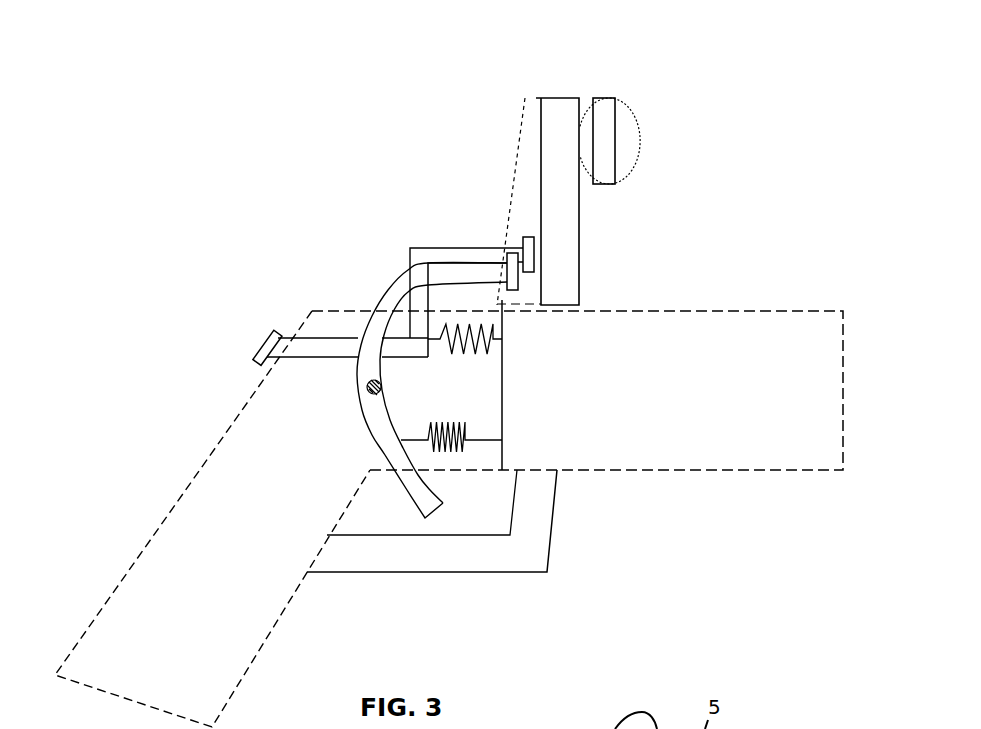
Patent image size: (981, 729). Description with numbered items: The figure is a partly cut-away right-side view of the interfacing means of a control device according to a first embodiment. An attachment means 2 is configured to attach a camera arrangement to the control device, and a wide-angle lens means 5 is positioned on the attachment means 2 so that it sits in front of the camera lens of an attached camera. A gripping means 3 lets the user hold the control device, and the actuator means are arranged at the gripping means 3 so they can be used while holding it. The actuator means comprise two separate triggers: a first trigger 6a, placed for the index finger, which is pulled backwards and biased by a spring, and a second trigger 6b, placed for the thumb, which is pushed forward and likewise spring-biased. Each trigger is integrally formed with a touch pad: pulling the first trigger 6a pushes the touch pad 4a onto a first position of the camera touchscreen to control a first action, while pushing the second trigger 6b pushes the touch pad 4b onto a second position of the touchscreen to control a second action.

The attachment means 2 is at (552, 97).
The gripping means 3 is at (655, 470).
The touch pad 4a is at (480, 270).
The touch pad 4b is at (413, 247).
The wide-angle lens means 5 is at (638, 143).
The first trigger 6a is at (430, 518).
The second trigger 6b is at (262, 348).